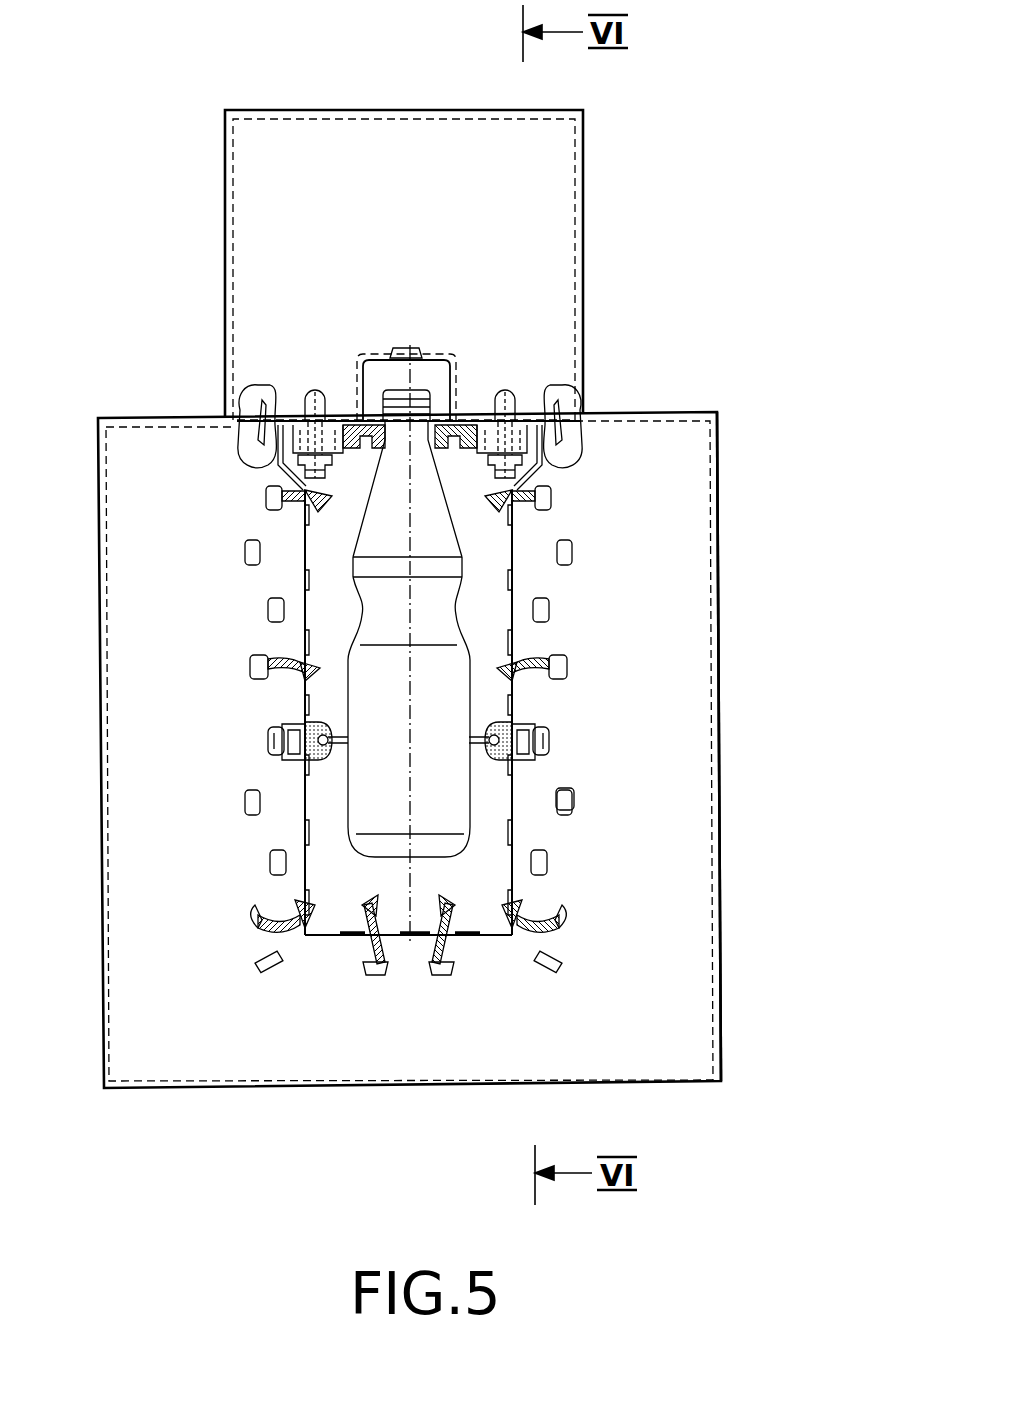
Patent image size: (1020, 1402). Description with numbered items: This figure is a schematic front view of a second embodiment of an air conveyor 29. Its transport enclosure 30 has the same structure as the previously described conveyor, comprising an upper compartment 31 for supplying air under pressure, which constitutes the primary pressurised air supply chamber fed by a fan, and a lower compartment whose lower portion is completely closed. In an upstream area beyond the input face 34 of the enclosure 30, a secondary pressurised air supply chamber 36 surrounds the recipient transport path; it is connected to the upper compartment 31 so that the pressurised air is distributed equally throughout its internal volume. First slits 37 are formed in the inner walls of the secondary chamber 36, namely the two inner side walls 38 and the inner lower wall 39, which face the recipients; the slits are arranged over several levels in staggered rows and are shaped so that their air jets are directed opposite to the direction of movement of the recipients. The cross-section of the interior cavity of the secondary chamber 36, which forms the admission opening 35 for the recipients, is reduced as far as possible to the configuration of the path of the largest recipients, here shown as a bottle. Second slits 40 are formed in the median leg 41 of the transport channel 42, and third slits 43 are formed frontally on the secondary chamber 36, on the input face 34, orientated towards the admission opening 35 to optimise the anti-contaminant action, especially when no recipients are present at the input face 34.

The air conveyor 29 is at (625, 247).
The transport enclosure 30 is at (325, 110).
The upper compartment 31 is at (426, 216).
The input face 34 is at (692, 750).
The admission opening 35 is at (480, 607).
The secondary pressurised air supply chamber 36 is at (722, 850).
The first slits 37 is at (513, 522).
The inner side walls 38 is at (513, 627).
The inner lower wall 39 is at (330, 940).
The second slits 40 is at (415, 350).
The median leg 41 is at (430, 356).
The transport channel 42 is at (333, 356).
The third slits 43 is at (575, 798).